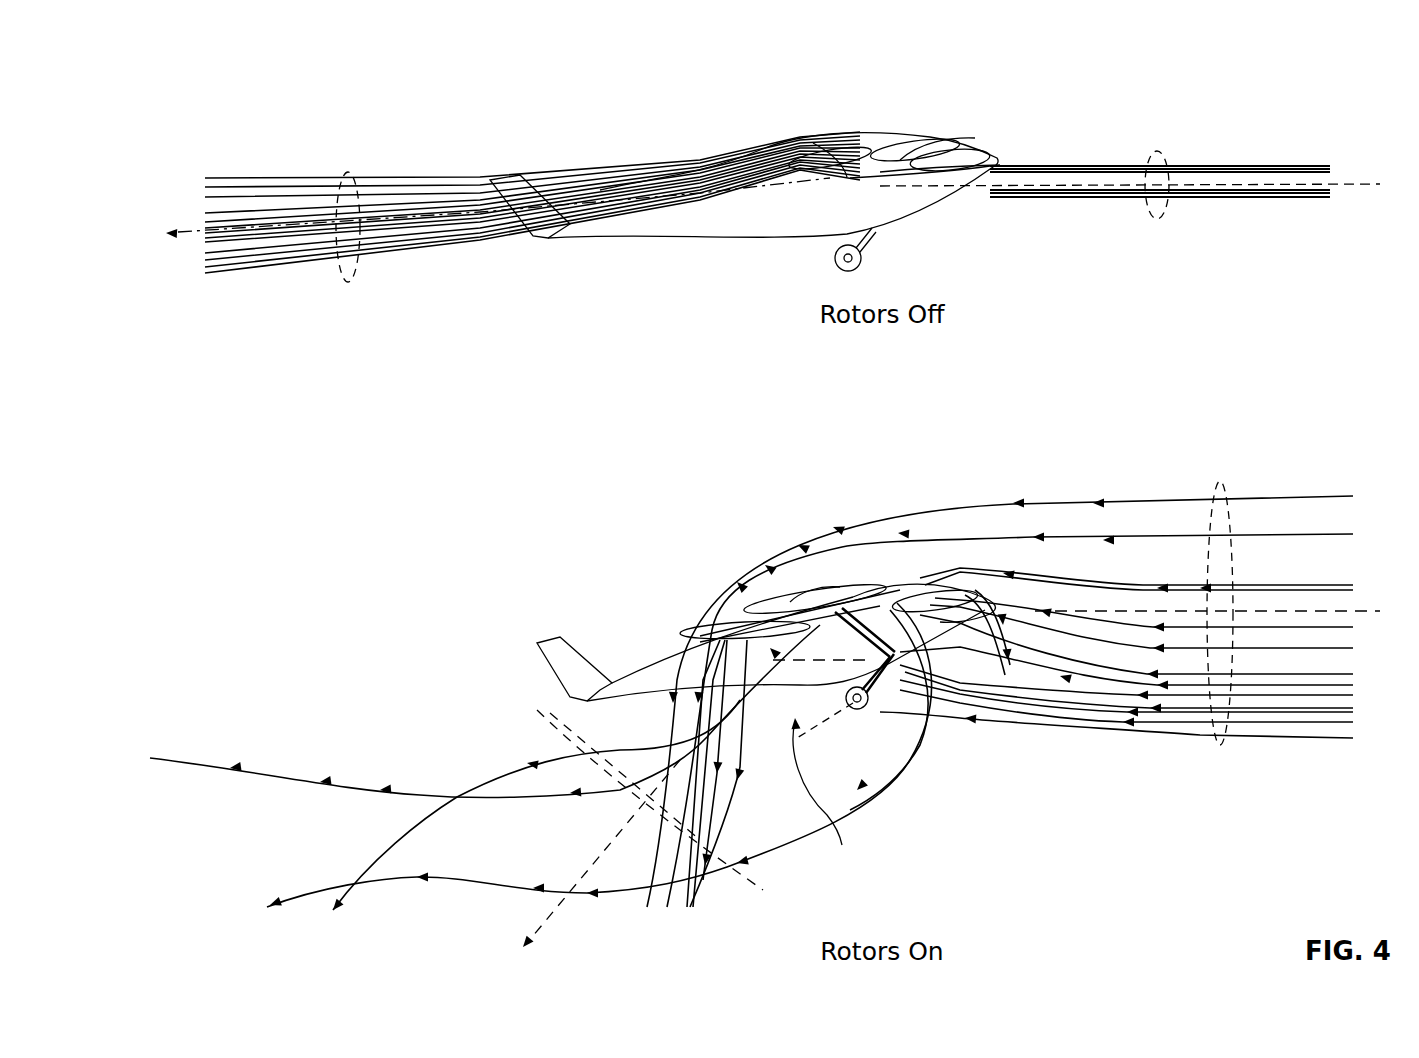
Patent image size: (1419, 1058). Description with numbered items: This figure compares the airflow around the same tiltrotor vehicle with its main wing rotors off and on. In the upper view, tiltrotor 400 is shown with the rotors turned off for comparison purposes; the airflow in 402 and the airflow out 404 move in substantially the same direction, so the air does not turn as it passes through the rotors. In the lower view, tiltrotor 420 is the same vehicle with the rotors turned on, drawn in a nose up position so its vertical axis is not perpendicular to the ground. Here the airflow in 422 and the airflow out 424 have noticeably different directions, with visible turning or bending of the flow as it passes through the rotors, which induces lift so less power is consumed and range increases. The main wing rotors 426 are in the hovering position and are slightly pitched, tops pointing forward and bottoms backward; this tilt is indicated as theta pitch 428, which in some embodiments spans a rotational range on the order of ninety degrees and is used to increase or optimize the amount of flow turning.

The tiltrotor 400 is at (862, 135).
The airflow in 402 is at (1158, 148).
The airflow out 404 is at (350, 170).
The tiltrotor 420 is at (878, 582).
The airflow in 422 is at (1220, 483).
The airflow out 424 is at (540, 707).
The main wing rotors 426 is at (770, 603).
The theta pitch 428 is at (832, 804).